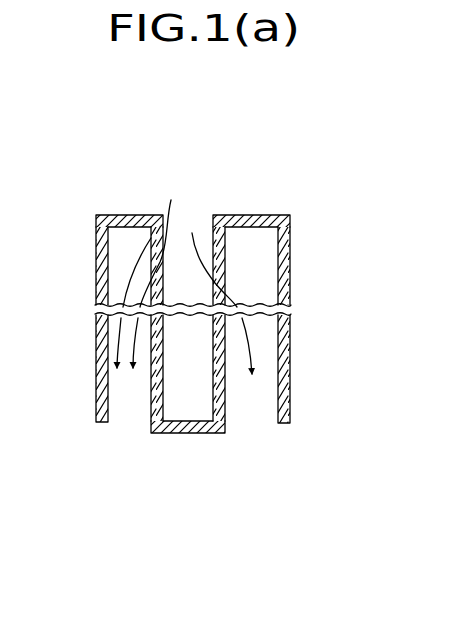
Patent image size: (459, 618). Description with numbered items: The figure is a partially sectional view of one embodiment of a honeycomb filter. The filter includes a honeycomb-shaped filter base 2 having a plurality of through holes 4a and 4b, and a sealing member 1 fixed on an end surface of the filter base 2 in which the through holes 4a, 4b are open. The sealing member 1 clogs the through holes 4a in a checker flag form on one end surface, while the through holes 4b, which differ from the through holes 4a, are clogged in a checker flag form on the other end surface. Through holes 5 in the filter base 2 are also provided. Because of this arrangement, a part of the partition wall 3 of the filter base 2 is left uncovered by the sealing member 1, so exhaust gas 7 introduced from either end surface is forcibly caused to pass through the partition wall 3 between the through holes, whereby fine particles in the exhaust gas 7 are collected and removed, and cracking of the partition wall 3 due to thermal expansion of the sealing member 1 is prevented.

The sealing member 1 is at (135, 215).
The filter base 2 is at (227, 397).
The partition wall 3 is at (147, 235).
The through holes 4a is at (183, 388).
The through holes 4b is at (253, 265).
The through holes 5 is at (202, 222).
The exhaust gas 7 is at (192, 233).